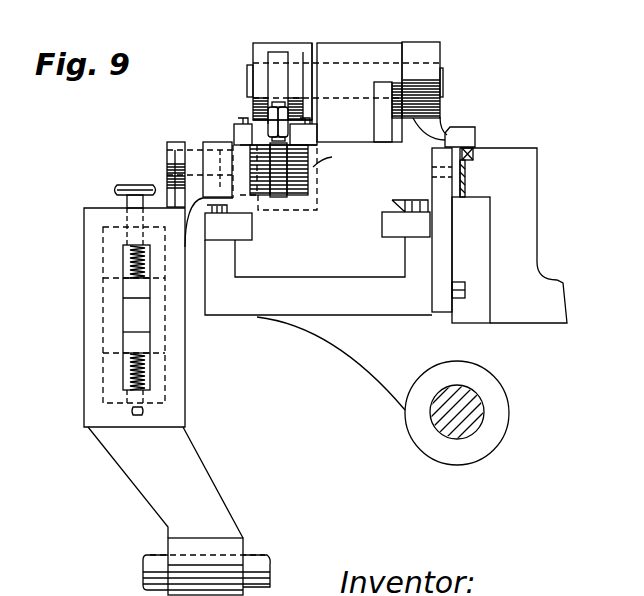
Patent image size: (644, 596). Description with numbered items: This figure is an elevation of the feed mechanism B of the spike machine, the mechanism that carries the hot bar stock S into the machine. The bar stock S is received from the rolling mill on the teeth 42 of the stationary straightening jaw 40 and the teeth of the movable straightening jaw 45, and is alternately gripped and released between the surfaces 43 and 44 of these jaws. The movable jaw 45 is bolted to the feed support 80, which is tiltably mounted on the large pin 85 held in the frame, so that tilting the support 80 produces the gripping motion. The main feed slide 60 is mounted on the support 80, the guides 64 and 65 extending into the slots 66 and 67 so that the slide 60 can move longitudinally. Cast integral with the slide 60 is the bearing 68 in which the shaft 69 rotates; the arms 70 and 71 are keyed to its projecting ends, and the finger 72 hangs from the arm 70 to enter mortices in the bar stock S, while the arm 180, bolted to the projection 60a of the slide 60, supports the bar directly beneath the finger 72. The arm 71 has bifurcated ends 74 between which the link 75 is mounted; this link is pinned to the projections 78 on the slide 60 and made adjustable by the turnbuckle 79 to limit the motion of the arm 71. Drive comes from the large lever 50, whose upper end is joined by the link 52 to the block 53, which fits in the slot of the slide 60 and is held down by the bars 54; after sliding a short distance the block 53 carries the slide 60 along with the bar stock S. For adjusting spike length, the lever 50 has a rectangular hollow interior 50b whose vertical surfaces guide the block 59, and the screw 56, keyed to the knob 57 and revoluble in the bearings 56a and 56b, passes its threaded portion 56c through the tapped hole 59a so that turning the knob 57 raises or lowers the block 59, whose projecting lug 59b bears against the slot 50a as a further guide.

The stationary straightening jaw 40 is at (523, 183).
The supporting teeth 42 is at (470, 168).
The gripping surface of straightening jaw 43 is at (474, 158).
The gripping surface of straightening jaw 44 is at (450, 132).
The movable straightening jaw 45 is at (445, 312).
The large lever 50 is at (199, 458).
The slot 50a is at (172, 375).
The rectangular hollow interior 50b is at (175, 397).
The link 52 is at (194, 143).
The block 53 is at (214, 140).
The bars 54 is at (240, 132).
The screw 56 is at (128, 258).
The bearing 56a is at (128, 222).
The bearing 56b is at (137, 410).
The threaded portion of screw 56c is at (127, 372).
The knob 57 is at (114, 192).
The block 59 is at (125, 337).
The tapped hole 59a is at (123, 344).
The projecting lug 59b is at (137, 308).
The main feed slide 60 is at (283, 260).
The projection 60a is at (410, 200).
The guide 64 is at (430, 226).
The guide 65 is at (237, 228).
The slot 66 is at (382, 222).
The slot 67 is at (252, 222).
The bearing 68 is at (388, 44).
The shaft 69 is at (350, 62).
The arm 70 is at (440, 110).
The arm 71 is at (253, 45).
The finger 72 is at (474, 150).
The bifurcated ends 74 is at (297, 63).
The link 75 is at (282, 167).
The projections 78 is at (308, 150).
The turnbuckle 79 is at (258, 123).
The feed support 80 is at (383, 343).
The large pin 85 is at (464, 440).
The arm 180 is at (333, 160).
The hot bar stock S is at (476, 150).
The feed mechanism B is at (493, 60).